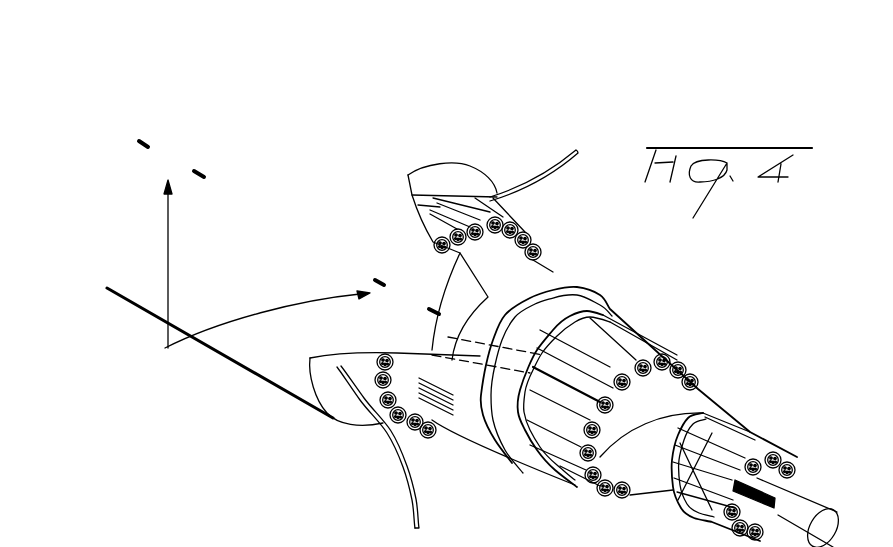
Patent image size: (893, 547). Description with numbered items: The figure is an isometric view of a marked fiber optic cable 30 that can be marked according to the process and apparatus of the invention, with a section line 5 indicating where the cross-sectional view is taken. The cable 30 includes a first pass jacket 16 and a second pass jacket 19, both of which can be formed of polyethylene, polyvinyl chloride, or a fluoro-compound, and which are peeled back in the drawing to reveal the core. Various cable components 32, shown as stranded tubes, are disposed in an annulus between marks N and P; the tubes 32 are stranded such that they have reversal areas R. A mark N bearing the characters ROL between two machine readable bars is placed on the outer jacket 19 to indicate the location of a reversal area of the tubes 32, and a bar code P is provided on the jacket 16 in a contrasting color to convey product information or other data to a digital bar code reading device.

The section line 5- 5 is at (472, 170).
The first pass jacket 16 is at (581, 285).
The second pass jacket 19 is at (467, 177).
The fiber optic cable 30 is at (457, 133).
The cable components 32 is at (527, 228).